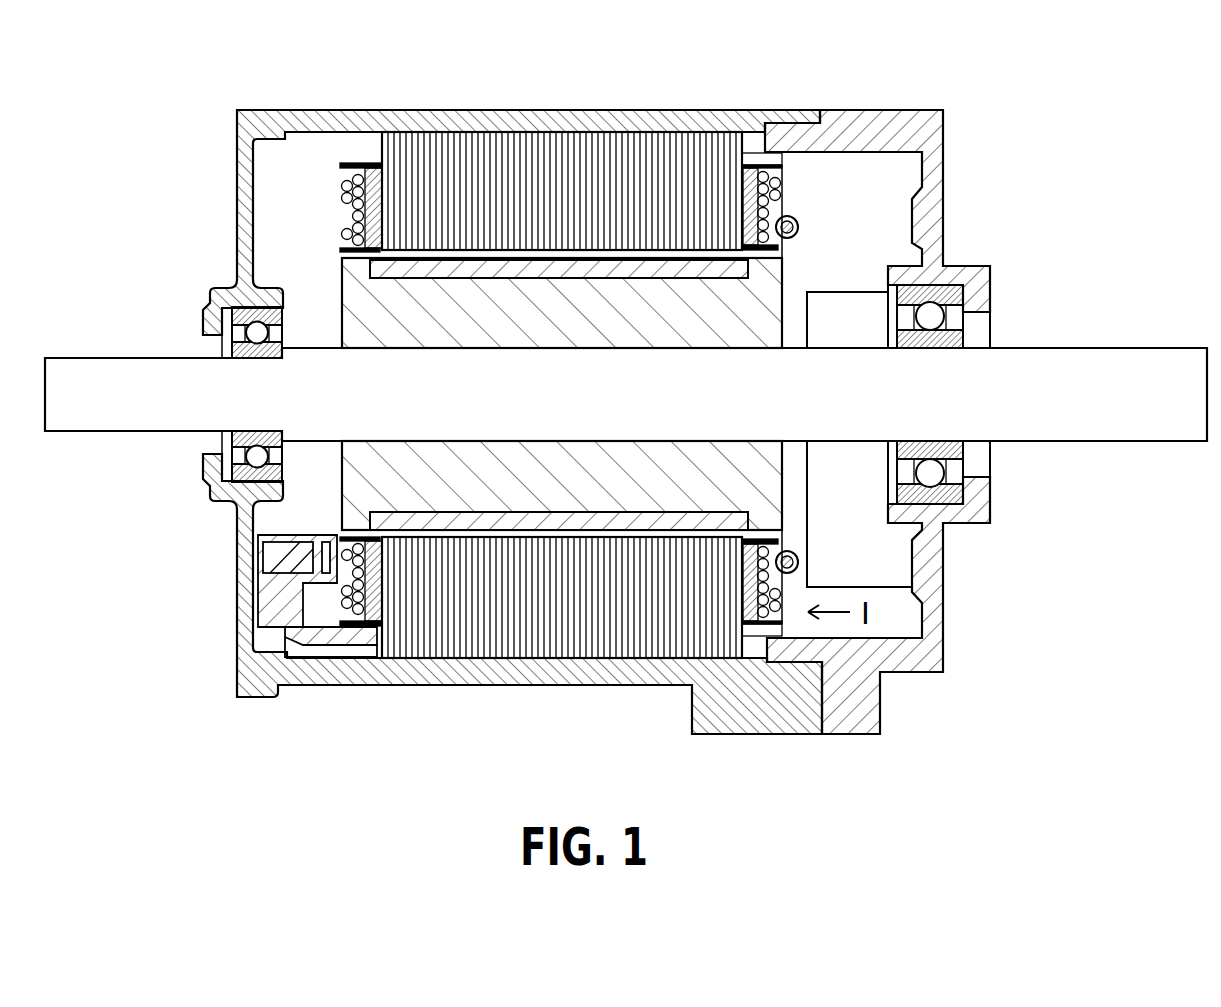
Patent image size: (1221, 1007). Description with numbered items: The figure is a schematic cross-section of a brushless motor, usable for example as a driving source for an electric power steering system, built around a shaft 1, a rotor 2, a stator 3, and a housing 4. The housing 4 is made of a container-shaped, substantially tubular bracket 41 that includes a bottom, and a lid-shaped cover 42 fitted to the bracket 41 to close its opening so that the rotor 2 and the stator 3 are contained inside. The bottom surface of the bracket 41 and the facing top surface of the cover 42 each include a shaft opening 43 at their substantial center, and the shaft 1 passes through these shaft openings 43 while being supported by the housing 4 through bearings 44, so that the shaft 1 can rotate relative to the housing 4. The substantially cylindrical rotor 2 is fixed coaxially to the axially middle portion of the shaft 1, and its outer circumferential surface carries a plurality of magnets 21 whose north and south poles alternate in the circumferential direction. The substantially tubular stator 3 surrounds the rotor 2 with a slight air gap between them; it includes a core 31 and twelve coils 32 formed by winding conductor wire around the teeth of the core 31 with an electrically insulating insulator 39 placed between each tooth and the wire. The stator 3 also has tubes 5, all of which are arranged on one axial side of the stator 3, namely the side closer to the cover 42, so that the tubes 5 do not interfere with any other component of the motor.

The shaft 1 is at (1131, 347).
The rotor 2 is at (627, 309).
The magnets 21 is at (550, 272).
The stator 3 is at (532, 390).
The core 31 is at (452, 638).
The coils 32 is at (342, 216).
The insulator 39 is at (373, 657).
The housing 4 is at (612, 472).
The bracket 41 is at (253, 683).
The cover 42 is at (937, 620).
The shaft opening 43 is at (197, 343).
The bearings 44 is at (240, 460).
The tubes 5 is at (785, 347).